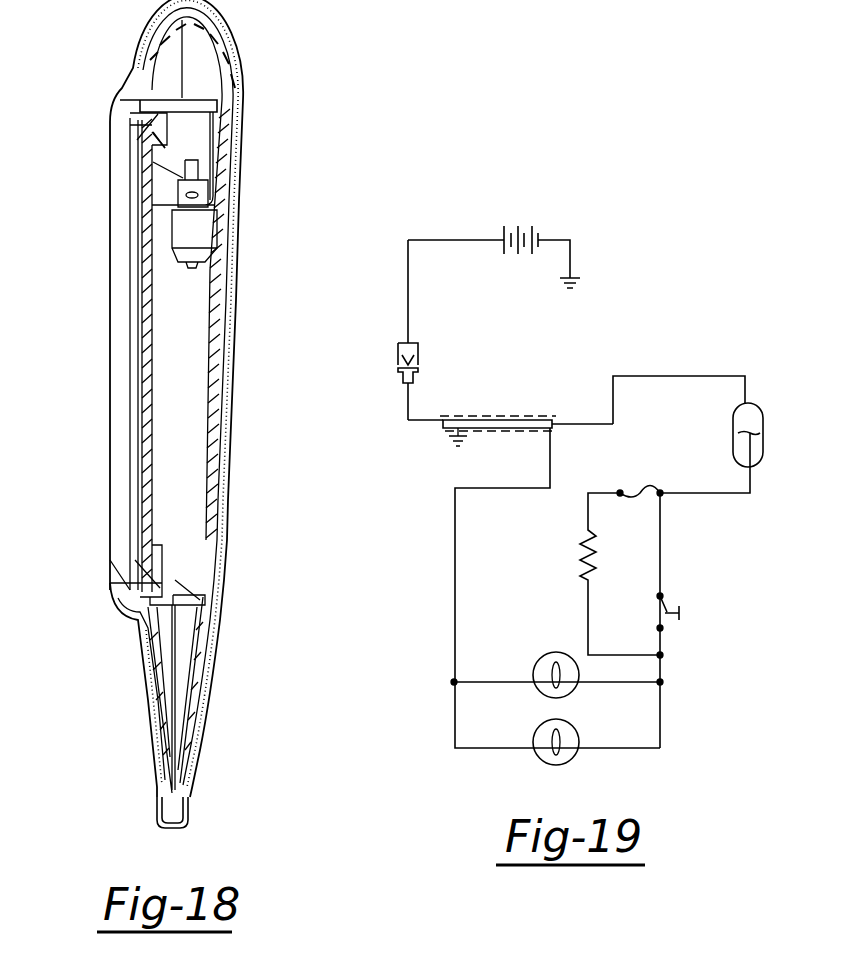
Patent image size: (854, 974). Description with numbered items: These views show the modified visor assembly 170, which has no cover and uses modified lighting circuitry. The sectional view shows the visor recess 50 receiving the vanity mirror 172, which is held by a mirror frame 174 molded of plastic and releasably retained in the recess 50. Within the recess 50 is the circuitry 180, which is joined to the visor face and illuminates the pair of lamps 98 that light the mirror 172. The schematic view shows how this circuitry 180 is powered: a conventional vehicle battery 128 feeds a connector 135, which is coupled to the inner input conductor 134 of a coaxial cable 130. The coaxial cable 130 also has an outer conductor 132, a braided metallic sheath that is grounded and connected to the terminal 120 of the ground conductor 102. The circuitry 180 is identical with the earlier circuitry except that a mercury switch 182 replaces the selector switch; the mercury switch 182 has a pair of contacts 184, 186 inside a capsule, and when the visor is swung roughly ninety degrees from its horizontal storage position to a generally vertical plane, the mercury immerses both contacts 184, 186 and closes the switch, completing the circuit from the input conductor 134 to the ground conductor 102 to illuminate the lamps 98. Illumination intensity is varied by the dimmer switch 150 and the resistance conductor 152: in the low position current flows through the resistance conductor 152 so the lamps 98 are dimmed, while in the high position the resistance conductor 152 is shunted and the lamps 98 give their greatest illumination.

In FIG. 18, the visor assembly 170 is at (235, 38).
In FIG. 18, the mirror frame 174 is at (128, 96).
In FIG. 18, the vanity mirror 172 is at (135, 318).
In FIG. 18, the recess 50 is at (208, 524).
In FIG. 19, the vehicle battery 128 is at (530, 222).
In FIG. 19, the connector 135 is at (420, 362).
In FIG. 19, the inner input conductor 134 is at (420, 426).
In FIG. 19, the ground conductor terminal 120 is at (546, 430).
In FIG. 19, the coaxial cable 130 is at (462, 418).
In FIG. 19, the outer conductor 132 is at (511, 418).
In FIG. 19, the ground conductor 102 is at (454, 613).
In FIG. 19, the circuitry 180 is at (712, 322).
In FIG. 19, the mercury switch 182 is at (763, 415).
In FIG. 19, the contact 186 is at (745, 438).
In FIG. 19, the contact 184 is at (750, 458).
In FIG. 19, the resistance conductor 152 is at (584, 558).
In FIG. 19, the dimmer switch 150 is at (672, 598).
In FIG. 19, the lamps 98 is at (538, 728).